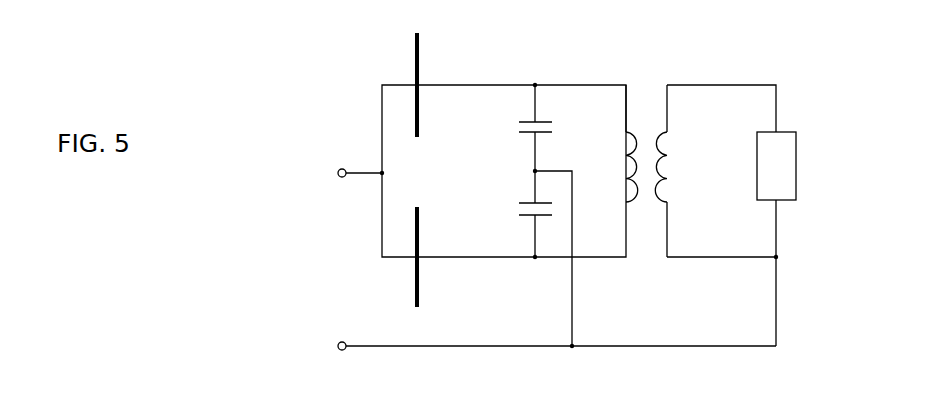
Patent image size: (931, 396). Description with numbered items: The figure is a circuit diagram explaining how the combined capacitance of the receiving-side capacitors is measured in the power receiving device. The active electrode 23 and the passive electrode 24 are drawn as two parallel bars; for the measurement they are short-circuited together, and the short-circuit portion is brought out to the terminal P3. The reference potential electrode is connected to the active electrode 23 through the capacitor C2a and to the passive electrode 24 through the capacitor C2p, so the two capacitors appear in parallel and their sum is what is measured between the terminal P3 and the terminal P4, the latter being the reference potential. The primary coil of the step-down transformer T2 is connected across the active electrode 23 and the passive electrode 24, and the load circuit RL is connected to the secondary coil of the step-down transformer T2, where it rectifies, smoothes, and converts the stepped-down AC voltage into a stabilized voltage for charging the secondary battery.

The active electrode 23 is at (419, 56).
The passive electrode 24 is at (419, 288).
The capacitor C2a is at (530, 214).
The capacitor C2p is at (520, 215).
The step-down transformer T2 is at (652, 80).
The load circuit RL is at (793, 132).
The terminal P3 is at (344, 174).
The terminal P4 is at (540, 347).